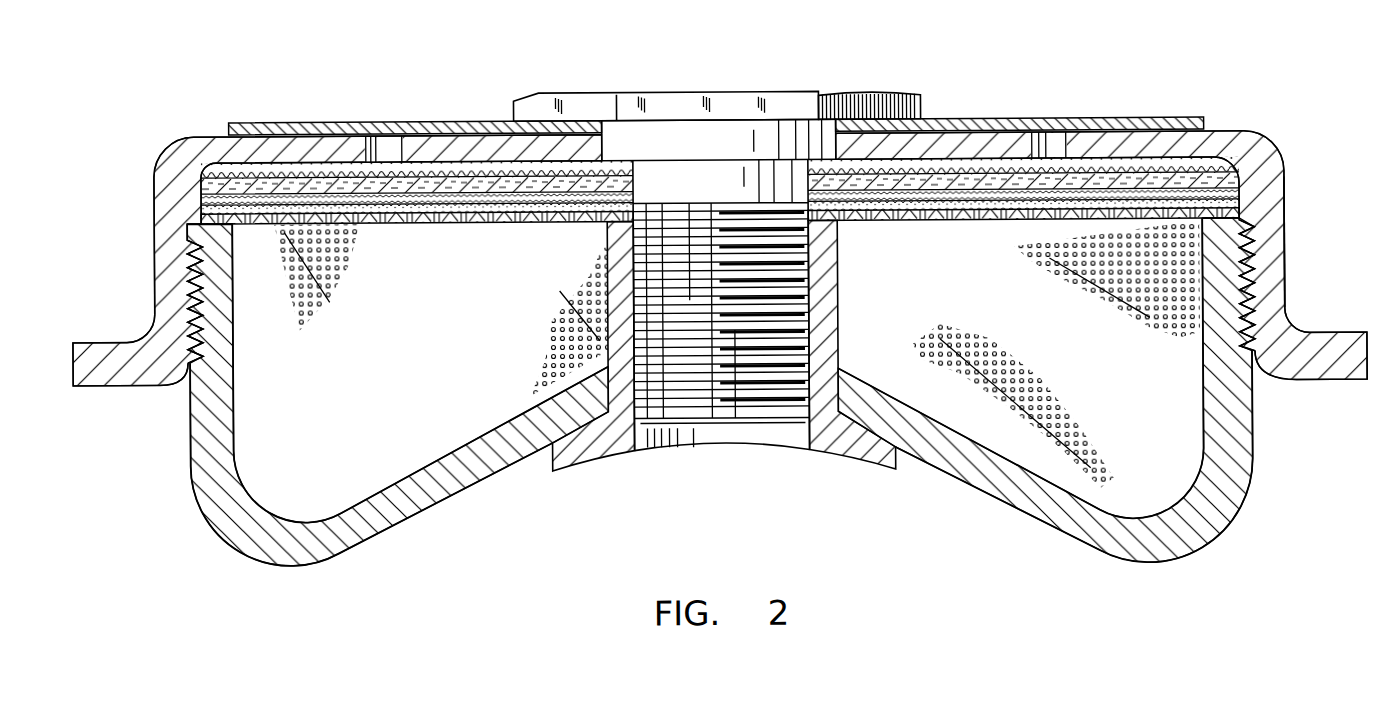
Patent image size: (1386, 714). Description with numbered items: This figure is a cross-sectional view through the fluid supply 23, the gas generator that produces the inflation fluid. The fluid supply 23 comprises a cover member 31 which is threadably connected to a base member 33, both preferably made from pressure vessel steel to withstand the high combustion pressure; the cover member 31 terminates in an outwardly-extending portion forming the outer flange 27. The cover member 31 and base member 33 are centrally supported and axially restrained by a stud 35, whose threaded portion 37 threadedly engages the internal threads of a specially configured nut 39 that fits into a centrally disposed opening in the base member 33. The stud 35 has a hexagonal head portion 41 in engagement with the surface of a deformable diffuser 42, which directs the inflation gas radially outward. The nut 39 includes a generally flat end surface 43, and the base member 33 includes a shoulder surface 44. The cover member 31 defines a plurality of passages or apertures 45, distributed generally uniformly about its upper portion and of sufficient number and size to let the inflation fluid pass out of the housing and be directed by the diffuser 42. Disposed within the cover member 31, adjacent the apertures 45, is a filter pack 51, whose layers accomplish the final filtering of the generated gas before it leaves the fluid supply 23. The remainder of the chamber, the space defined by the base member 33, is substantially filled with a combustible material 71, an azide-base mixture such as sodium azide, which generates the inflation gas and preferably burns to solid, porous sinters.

The fluid supply 23 is at (719, 264).
The outer flange 27 is at (112, 340).
The cover member 31 is at (1286, 211).
The base member 33 is at (1241, 504).
The stud 35 is at (743, 84).
The threaded portion 37 is at (700, 240).
The nut 39 is at (652, 450).
The hexagonal head portion 41 is at (864, 93).
The deformable diffuser 42 is at (315, 120).
The flat end surface 43 is at (840, 221).
The shoulder surface 44 is at (237, 222).
The apertures 45 is at (394, 137).
The filter pack 51 is at (507, 233).
The combustible material 71 is at (737, 356).